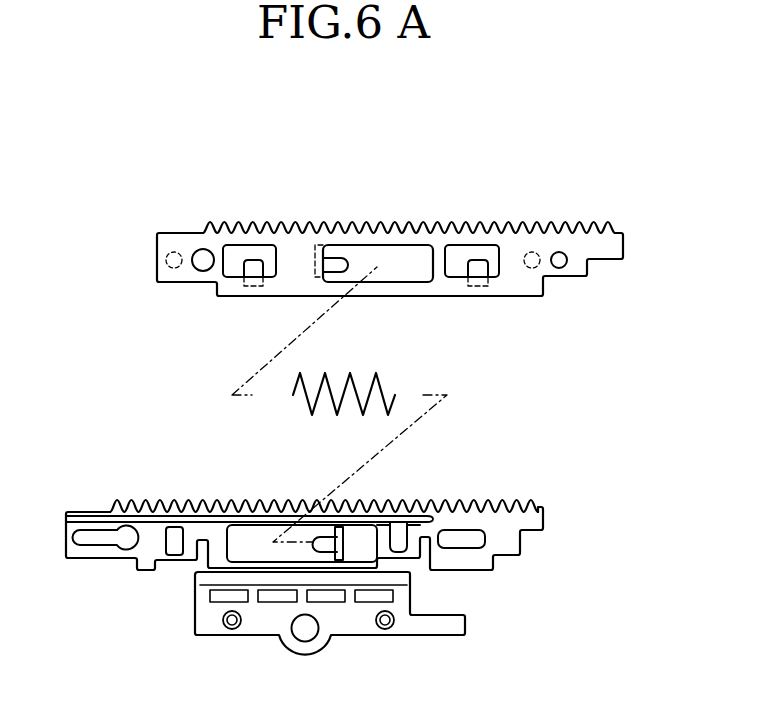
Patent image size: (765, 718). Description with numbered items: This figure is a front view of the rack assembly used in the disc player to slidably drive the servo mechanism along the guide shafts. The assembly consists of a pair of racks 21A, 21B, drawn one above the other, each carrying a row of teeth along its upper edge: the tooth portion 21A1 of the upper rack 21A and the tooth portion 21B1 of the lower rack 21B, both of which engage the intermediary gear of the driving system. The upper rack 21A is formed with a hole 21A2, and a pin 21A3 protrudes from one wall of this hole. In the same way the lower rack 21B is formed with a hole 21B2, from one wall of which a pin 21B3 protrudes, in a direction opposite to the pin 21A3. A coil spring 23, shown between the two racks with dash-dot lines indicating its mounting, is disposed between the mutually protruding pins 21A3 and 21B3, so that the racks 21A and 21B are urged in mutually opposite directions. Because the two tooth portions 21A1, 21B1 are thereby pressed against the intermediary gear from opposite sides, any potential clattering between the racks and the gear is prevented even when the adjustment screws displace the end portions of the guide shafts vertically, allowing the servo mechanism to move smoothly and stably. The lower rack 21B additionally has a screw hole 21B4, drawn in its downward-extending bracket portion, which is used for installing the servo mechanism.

The rack 21A is at (390, 254).
The tooth portion 21A1 is at (512, 224).
The hole 21A2 is at (415, 275).
The pin 21A3 is at (345, 264).
The coil spring 23 is at (328, 385).
The rack 21B is at (304, 569).
The tooth portion 21B1 is at (272, 503).
The hole 21B2 is at (240, 530).
The pin 21B3 is at (324, 548).
The screw hole 21B4 is at (300, 632).